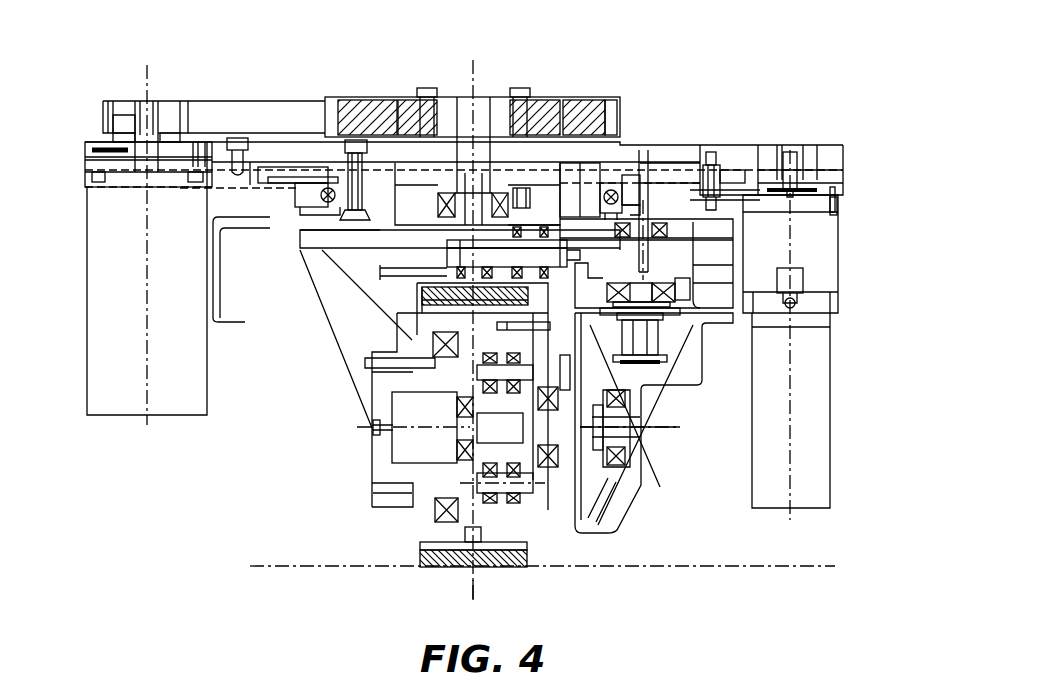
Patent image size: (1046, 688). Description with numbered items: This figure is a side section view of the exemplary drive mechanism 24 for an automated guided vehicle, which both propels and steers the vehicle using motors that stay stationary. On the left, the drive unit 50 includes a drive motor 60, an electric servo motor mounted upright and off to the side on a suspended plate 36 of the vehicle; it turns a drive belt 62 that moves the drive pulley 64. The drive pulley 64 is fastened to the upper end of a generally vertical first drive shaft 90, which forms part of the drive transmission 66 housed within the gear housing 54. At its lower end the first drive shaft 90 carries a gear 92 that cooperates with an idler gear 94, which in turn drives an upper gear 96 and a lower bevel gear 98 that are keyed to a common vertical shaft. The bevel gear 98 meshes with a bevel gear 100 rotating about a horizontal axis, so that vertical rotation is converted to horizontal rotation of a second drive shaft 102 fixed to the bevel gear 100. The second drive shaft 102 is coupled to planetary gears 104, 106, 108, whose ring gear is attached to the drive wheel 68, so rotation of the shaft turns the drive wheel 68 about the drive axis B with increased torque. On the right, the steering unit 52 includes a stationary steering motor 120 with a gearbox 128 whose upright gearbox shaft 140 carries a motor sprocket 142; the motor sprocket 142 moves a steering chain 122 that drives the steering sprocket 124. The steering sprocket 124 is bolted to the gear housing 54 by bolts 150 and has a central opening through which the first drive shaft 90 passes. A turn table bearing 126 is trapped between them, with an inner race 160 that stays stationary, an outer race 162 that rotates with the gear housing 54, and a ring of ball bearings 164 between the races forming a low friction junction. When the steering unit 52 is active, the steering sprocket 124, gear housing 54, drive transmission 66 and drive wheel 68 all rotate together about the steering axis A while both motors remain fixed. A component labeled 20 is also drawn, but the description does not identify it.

The drive mechanism 24 is at (787, 72).
The drive belt 62 is at (208, 108).
The suspended plate 36 is at (285, 140).
The drive pulley 64 is at (332, 100).
The fastener 20 is at (372, 160).
The first drive shaft 90 is at (472, 135).
The gear 94 is at (501, 203).
The drive transmission 66 is at (577, 170).
The inner race 160 is at (612, 190).
The outer race 162 is at (625, 190).
The bolts 150 is at (650, 172).
The steering chain 122 is at (735, 165).
The gearbox shaft 140 is at (791, 165).
The motor sprocket 142 is at (833, 180).
The steering sprocket 124 is at (258, 183).
The bearing 126 is at (318, 203).
The gear housing 54 is at (300, 290).
The drive unit 50 is at (82, 275).
The drive motor 60 is at (205, 383).
The gear 92 is at (455, 268).
The ring of ball bearings 164 is at (531, 246).
The gear 96 is at (715, 245).
The bevel gear 98 is at (678, 345).
The bevel gear 100 is at (597, 507).
The second drive shaft 102 is at (462, 427).
The planetary gear 106 is at (455, 465).
The planetary gear 108 is at (468, 510).
The drive wheel 68 is at (483, 570).
The planetary gear 104 is at (520, 553).
The steering unit 52 is at (840, 330).
The gearbox 128 is at (840, 262).
The steering motor 120 is at (822, 498).
The steering axis A is at (473, 587).
The drive axis B is at (655, 425).